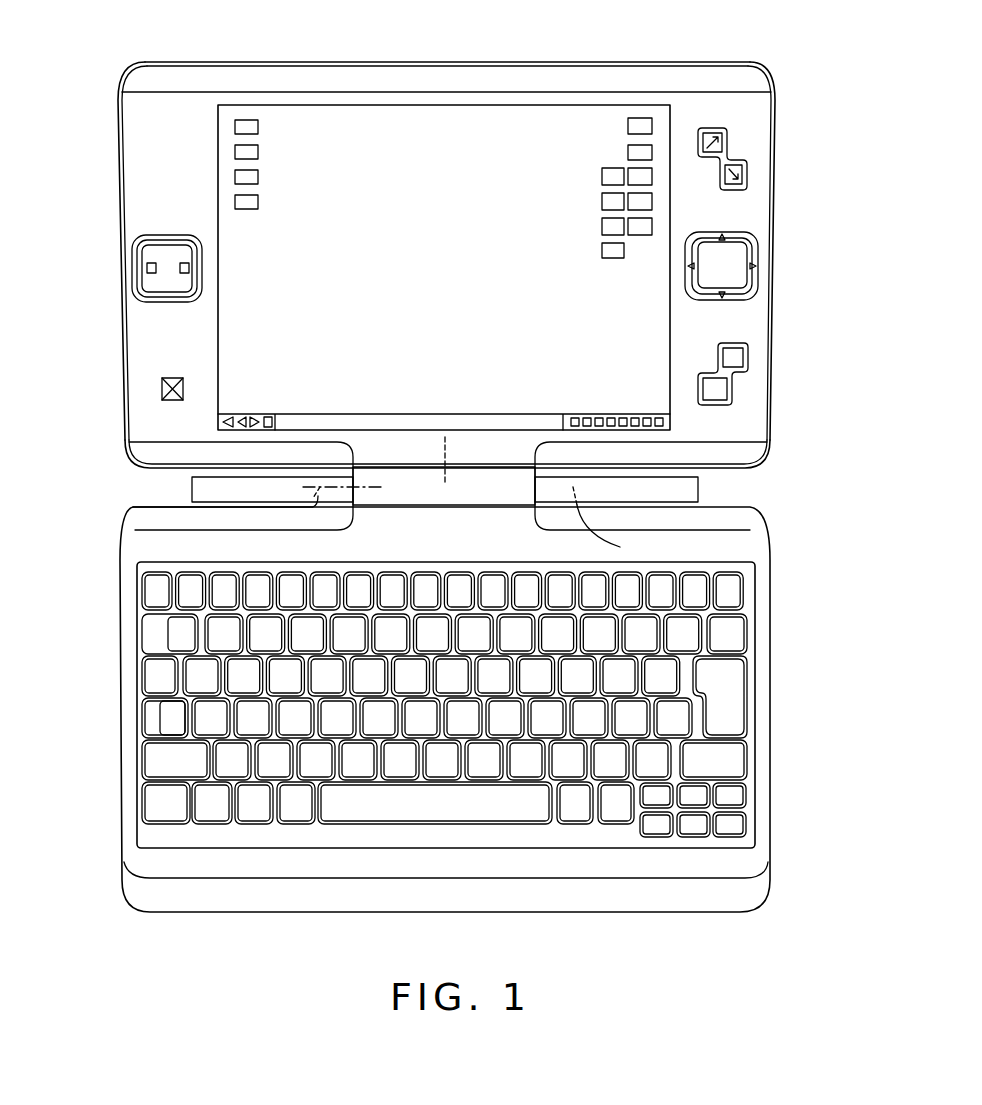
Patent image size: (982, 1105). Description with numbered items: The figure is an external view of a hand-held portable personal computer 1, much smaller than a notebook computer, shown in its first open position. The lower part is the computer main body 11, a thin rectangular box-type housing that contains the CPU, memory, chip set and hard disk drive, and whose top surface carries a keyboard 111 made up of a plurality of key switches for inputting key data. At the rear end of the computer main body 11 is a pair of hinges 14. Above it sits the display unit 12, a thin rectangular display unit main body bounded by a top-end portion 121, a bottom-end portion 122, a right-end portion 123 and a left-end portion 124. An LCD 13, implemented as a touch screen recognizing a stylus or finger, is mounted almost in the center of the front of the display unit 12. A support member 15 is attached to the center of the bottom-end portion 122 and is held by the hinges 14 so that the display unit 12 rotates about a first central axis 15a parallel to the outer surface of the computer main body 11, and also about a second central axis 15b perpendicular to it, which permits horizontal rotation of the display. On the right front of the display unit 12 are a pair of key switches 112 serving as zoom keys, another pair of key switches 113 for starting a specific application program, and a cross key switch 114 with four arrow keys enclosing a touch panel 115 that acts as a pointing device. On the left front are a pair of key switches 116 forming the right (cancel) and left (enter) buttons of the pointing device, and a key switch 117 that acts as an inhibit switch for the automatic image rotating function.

The portable personal computer 1 is at (443, 456).
The computer main body 11 is at (482, 709).
The display unit 12 is at (443, 265).
The LCD 13 is at (527, 115).
The hinges 14 is at (203, 490).
The support member 15 is at (410, 490).
The first central axis 15a is at (310, 498).
The second central axis 15b is at (450, 443).
The keyboard 111 is at (733, 663).
The key switches 112 is at (735, 148).
The key switches 113 is at (733, 383).
The key switch 114 is at (765, 257).
The touch panel 115 is at (722, 268).
The key switches 116 is at (184, 275).
The key switch 117 is at (162, 390).
The top-end portion 121 is at (323, 62).
The bottom-end portion 122 is at (727, 468).
The right-end portion 123 is at (770, 115).
The left-end portion 124 is at (120, 122).